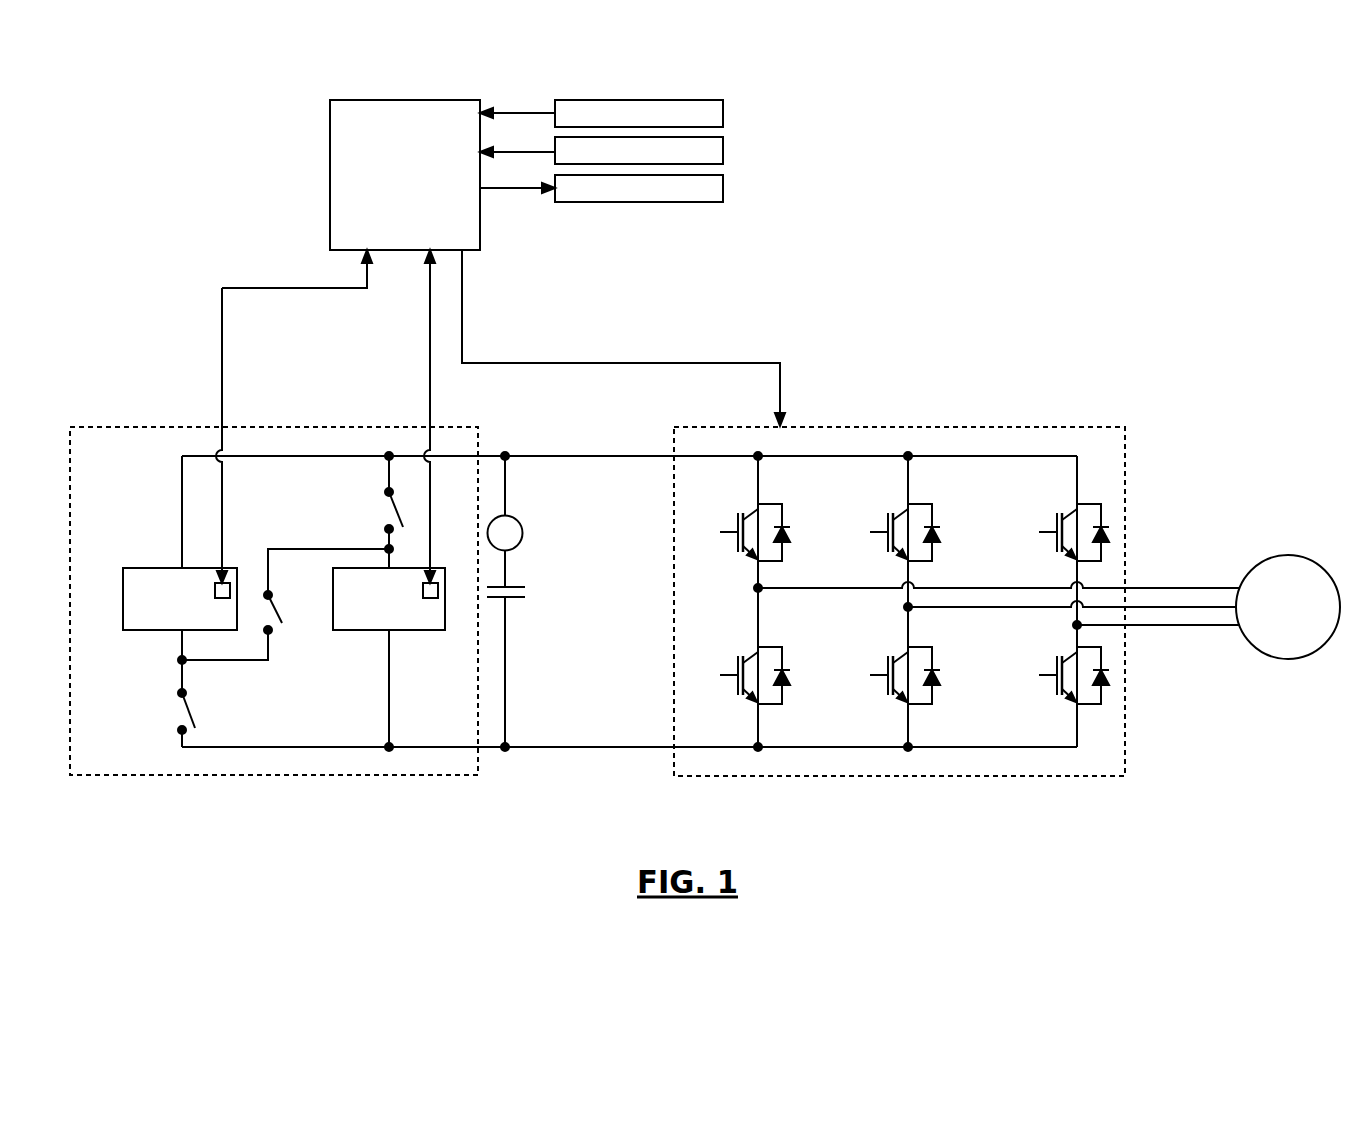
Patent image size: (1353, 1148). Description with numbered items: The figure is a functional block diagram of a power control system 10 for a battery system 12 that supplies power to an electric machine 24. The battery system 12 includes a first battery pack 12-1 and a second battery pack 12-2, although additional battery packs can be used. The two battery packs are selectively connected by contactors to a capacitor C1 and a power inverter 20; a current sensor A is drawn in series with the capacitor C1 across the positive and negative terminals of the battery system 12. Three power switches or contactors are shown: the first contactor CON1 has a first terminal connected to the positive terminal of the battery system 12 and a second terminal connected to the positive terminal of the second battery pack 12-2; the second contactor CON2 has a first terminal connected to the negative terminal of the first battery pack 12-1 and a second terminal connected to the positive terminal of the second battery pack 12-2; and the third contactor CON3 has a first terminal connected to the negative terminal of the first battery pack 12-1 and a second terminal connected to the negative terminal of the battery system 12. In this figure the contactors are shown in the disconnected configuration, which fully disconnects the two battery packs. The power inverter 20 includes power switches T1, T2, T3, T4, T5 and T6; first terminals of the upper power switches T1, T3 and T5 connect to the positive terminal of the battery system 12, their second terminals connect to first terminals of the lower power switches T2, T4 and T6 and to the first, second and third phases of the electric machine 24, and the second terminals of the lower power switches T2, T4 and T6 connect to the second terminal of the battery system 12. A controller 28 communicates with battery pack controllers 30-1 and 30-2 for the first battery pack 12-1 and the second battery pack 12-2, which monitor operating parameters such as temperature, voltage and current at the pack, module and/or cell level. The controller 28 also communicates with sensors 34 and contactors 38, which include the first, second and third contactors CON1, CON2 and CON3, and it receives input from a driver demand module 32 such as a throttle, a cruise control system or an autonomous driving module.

The power control system 10 is at (113, 345).
The battery system 12 is at (148, 426).
The first battery pack 12-1 is at (132, 567).
The second battery pack 12-2 is at (357, 575).
The battery pack controller 30-1 is at (236, 578).
The battery pack controller 30-2 is at (427, 600).
The power inverter 20 is at (957, 573).
The electric machine 24 is at (1290, 555).
The controller 28 is at (330, 171).
The driver demand module 32 is at (725, 113).
The sensors 34 is at (725, 152).
The contactors 38 is at (725, 190).
The first contactor CON1 is at (382, 514).
The second contactor CON2 is at (286, 613).
The third contactor CON3 is at (171, 708).
The capacitor C1 is at (515, 649).
The current sensor A is at (505, 503).
The power switch T1 is at (748, 526).
The power switch T2 is at (748, 680).
The power switch T3 is at (898, 526).
The power switch T4 is at (898, 680).
The power switch T5 is at (1067, 526).
The power switch T6 is at (1067, 680).